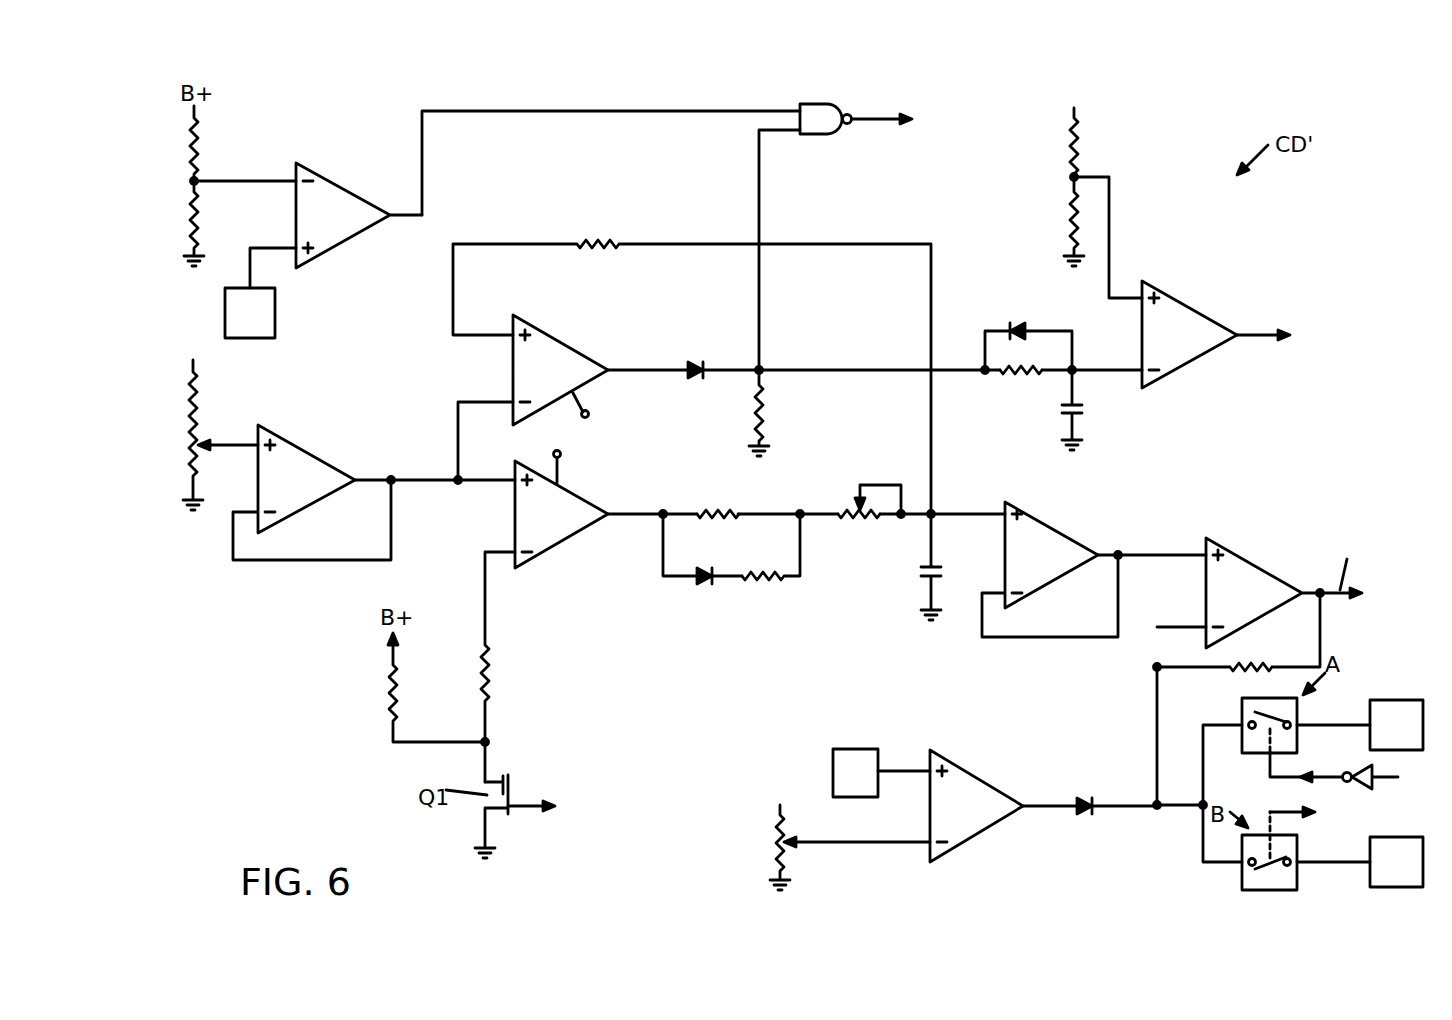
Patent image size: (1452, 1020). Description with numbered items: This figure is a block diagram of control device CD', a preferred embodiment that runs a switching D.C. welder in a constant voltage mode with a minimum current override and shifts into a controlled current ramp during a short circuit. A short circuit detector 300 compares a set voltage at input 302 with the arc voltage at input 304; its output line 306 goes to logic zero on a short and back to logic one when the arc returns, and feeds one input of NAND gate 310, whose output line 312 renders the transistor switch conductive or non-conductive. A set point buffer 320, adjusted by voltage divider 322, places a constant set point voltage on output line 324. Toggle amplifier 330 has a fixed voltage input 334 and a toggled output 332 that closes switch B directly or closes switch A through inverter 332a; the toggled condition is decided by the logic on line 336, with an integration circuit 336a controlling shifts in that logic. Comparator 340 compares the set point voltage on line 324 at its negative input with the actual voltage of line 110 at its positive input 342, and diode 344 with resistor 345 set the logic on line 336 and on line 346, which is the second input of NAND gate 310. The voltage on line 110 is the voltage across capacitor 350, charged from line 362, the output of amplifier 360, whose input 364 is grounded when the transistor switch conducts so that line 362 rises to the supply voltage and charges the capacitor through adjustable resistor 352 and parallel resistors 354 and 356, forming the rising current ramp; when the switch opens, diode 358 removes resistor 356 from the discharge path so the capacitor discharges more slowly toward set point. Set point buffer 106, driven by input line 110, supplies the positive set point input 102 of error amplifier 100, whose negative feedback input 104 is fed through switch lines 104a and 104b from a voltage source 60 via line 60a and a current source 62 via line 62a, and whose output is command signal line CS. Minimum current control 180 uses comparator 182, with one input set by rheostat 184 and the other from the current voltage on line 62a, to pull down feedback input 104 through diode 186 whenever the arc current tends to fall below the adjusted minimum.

The short circuit detector 300 is at (342, 181).
The input 302 is at (255, 178).
The input 304 is at (262, 242).
The output line 306 is at (627, 113).
The NAND gate 310 is at (819, 137).
The output line 312 is at (878, 123).
The set point buffer 320 is at (298, 446).
The voltage divider 322 is at (228, 440).
The output line 324 is at (418, 475).
The toggle amplifier 330 is at (1188, 306).
The toggled output 332 is at (1255, 330).
The inverter 332a is at (1352, 770).
The fixed voltage input 334 is at (1112, 219).
The line 336 is at (1122, 376).
The integration circuit 336a is at (1018, 376).
The comparator 340 is at (557, 341).
The positive input 342 is at (478, 330).
The diode 344 is at (693, 360).
The resistor 345 is at (760, 406).
The line 346 is at (762, 300).
The capacitor 350 is at (920, 573).
The adjustable resistor 352 is at (862, 521).
The resistor 354 is at (722, 510).
The resistor 356 is at (762, 583).
The diode 358 is at (700, 586).
The amplifier 360 is at (580, 496).
The line 362 is at (645, 510).
The input 364 is at (487, 604).
The error amplifier 100 is at (1250, 560).
The positive set point input 102 is at (1172, 550).
The negative feedback input 104 is at (1155, 648).
The switch input line 104a is at (1216, 724).
The switch input line 104b is at (1200, 838).
The set point buffer 106 is at (1055, 528).
The input line 110 is at (975, 510).
The minimum current control 180 is at (881, 783).
The comparator 182 is at (991, 786).
The rheostat 184 is at (770, 829).
The diode 186 is at (1088, 815).
The voltage reference source Va 60 is at (1368, 851).
The voltage reference line 60a is at (1340, 866).
The current reference source Ia 62 is at (1402, 696).
The line 62a is at (1330, 722).